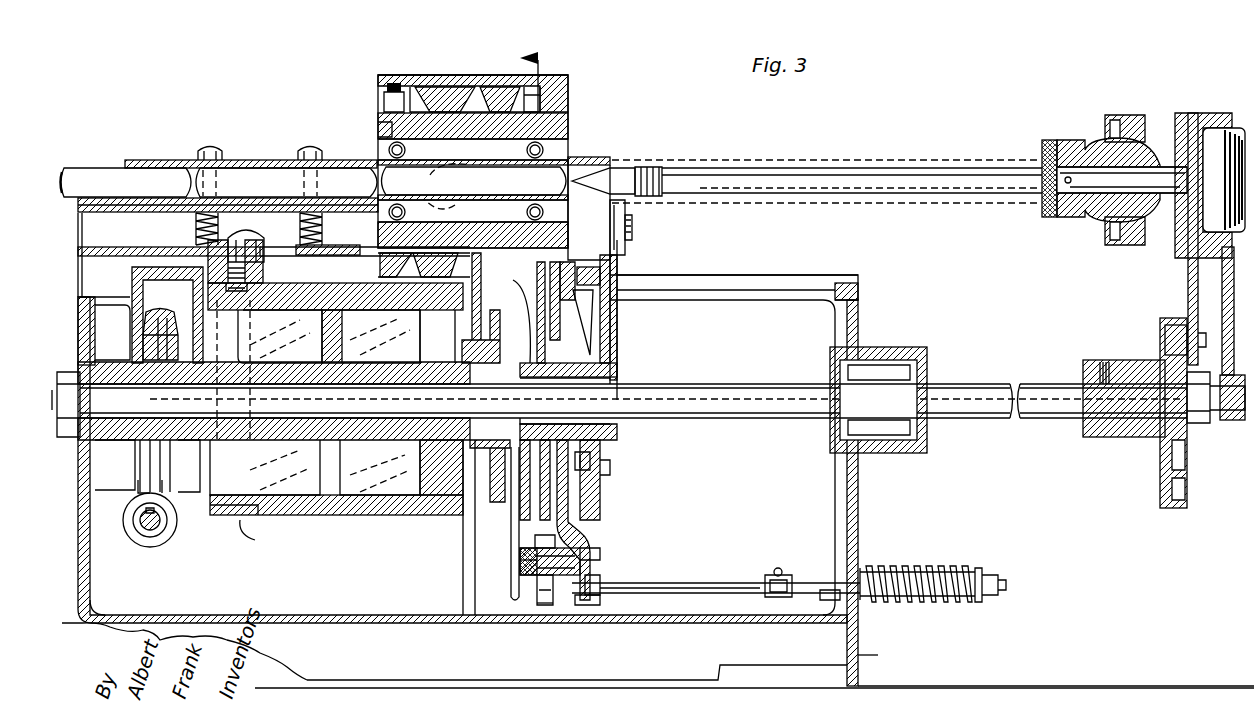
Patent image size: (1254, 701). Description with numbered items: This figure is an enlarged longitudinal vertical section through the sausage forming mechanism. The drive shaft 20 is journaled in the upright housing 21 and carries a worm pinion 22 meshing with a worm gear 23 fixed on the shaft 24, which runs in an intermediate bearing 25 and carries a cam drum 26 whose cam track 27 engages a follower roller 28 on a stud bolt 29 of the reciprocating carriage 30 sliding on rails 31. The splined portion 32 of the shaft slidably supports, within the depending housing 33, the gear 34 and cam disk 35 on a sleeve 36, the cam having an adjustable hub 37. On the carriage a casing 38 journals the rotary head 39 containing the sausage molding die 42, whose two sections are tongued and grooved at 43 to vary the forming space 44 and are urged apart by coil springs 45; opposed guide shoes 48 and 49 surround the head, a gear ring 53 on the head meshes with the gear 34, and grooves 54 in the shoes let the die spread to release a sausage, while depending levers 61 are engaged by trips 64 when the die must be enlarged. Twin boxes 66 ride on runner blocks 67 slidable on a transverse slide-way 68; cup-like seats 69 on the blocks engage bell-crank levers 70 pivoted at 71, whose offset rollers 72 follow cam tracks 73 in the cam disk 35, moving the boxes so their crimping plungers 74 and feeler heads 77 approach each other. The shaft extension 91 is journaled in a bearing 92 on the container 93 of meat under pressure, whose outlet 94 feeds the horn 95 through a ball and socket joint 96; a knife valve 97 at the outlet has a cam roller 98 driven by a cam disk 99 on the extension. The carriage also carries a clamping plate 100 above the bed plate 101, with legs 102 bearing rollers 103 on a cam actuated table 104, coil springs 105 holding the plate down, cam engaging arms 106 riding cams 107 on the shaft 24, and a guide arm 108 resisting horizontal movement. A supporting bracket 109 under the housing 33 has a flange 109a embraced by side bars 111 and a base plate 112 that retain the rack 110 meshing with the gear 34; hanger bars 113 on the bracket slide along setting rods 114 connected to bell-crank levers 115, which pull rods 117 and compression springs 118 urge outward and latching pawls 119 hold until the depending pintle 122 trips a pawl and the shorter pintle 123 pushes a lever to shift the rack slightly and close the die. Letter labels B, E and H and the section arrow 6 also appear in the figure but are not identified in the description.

The drive shaft 20 is at (140, 536).
The upright housing 21 is at (858, 503).
The worm pinion 22 is at (182, 550).
The worm gear 23 is at (148, 462).
The shaft 24 is at (145, 365).
The intermediate bearing 25 is at (441, 467).
The cam drum 26 is at (360, 515).
The cam track or groove 27 is at (237, 532).
The follower roller 28 is at (215, 292).
The stud bolt 29 is at (270, 232).
The reciprocating carriage 30 is at (98, 235).
The rails 31 is at (840, 275).
The splined portion 32 is at (782, 375).
The housing 33 is at (600, 505).
The gear 34 is at (510, 520).
The cam disk 35 is at (660, 440).
The sleeve 36 is at (612, 360).
The hub 37 is at (608, 430).
The casing 38 is at (548, 92).
The rotary head 39 is at (545, 148).
The sausage molding die 42 is at (585, 160).
The tongue or groove 43 is at (378, 130).
The sausage-forming space 44 is at (315, 140).
The coil springs 45 is at (387, 87).
The guide shoe 48 is at (430, 86).
The guide shoe 49 is at (500, 75).
The gear ring 53 is at (555, 122).
The seats or grooves 54 is at (465, 87).
The depending levers 61 is at (465, 345).
The trips 64 is at (511, 308).
The twin boxes or housings 66 is at (600, 163).
The runner blocks 67 is at (604, 255).
The transverse track or slide-way 68 is at (632, 225).
The cup-like seats 69 is at (622, 290).
The bell-crank levers 70 is at (620, 310).
The pivot 71 is at (612, 345).
The offset rollers 72 is at (596, 335).
The cam tracks 73 is at (590, 460).
The sausage crimping plunger or blade 74 is at (580, 164).
The feeler heads 77 is at (572, 180).
The drive shaft extension 91 is at (1010, 430).
The bearing 92 is at (1232, 422).
The container 93 is at (1222, 292).
The outlet 94 is at (1210, 113).
The horn or nozzle 95 is at (930, 168).
The ball and socket joint 96 is at (1100, 150).
The knife valve 97 is at (1188, 240).
The cam roller 98 is at (1165, 340).
The cam disk 99 is at (1140, 447).
The clamping or holding plate 100 is at (140, 160).
The bed plate or table 101 is at (238, 198).
The depending legs 102 is at (196, 224).
The rollers 103 is at (300, 224).
The cam actuated table 104 is at (328, 236).
The coil springs 105 is at (228, 246).
The cam engaging arms 106 is at (398, 326).
The cams 107 is at (196, 462).
The guide arm 108 is at (274, 272).
The supporting bracket 109 is at (578, 535).
The lower horizontal flange 109a is at (520, 570).
The rack 110 is at (530, 542).
The side bars 111 is at (585, 556).
The base plate 112 is at (470, 615).
The hanger bars 113 is at (600, 578).
The lever setting rods 114 is at (705, 595).
The bell-crank levers 115 is at (770, 575).
The spring actuated pull rod 117 is at (880, 568).
The compression spring 118 is at (970, 600).
The latching pawls 119 is at (825, 600).
The depending pintle 122 is at (546, 605).
The shorter pintle 123 is at (540, 585).
The head B is at (388, 75).
The axis E is at (640, 170).
The base H is at (876, 655).
The section line 6 is at (533, 75).